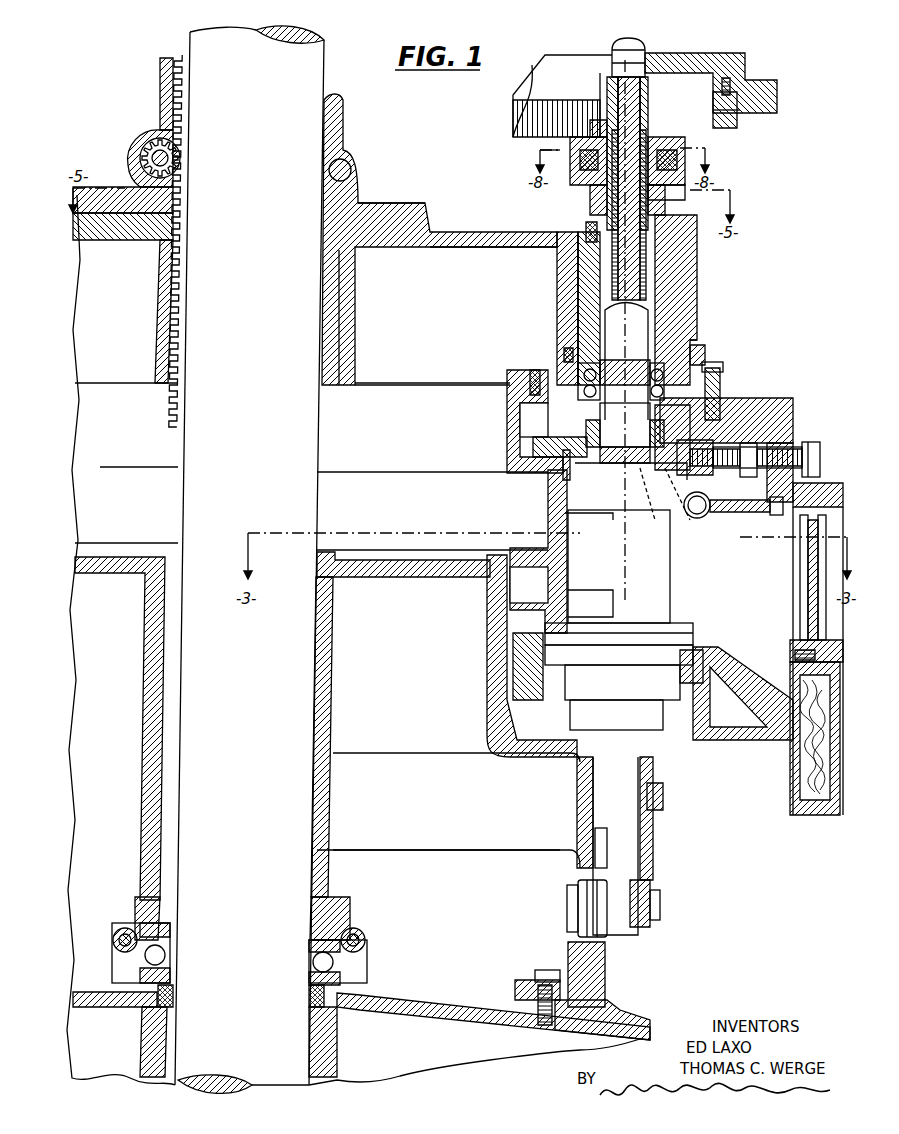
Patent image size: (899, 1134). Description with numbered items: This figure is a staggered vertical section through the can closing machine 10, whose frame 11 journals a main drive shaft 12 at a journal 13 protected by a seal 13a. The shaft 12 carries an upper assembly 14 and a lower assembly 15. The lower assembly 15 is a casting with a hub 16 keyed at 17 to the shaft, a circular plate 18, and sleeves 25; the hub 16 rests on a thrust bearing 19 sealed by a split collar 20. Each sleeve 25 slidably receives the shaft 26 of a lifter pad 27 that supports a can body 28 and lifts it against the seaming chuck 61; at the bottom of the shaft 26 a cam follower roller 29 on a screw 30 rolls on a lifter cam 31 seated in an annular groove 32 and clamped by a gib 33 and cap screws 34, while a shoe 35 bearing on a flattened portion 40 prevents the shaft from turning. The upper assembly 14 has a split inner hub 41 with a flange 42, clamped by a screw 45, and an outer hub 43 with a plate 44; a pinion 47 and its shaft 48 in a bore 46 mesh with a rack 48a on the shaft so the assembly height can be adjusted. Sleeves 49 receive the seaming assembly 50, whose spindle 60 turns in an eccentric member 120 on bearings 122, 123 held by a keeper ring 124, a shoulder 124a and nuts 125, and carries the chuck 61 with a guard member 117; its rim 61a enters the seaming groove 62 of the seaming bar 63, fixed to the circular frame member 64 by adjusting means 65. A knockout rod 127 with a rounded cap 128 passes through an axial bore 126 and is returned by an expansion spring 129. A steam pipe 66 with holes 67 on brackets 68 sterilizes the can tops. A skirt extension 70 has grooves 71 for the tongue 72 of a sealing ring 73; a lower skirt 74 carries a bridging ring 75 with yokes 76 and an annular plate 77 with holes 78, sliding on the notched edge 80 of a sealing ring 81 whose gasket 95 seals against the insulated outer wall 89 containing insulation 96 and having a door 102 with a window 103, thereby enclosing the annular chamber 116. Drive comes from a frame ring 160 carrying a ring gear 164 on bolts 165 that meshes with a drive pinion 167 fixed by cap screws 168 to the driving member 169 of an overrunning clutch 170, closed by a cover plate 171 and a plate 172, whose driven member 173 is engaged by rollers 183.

The machine 10 is at (722, 50).
The frame 11 is at (472, 996).
The main drive shaft 12 is at (322, 74).
The journal 13 is at (309, 1087).
The seal 13a is at (352, 1010).
The upper assembly 14 is at (436, 196).
The lower assembly 15 is at (450, 848).
The hub 16 is at (330, 745).
The key 17 is at (182, 738).
The circular plate 18 is at (414, 580).
The thrust bearing 19 is at (352, 925).
The split collar 20 is at (345, 972).
The sleeve 25 is at (578, 792).
The shaft 26 is at (626, 786).
The lifter pad 27 is at (694, 636).
The can body 28 is at (672, 572).
The cam follower roller 29 is at (582, 893).
The screw 30 is at (660, 914).
The lifter cam 31 is at (604, 976).
The annular groove 32 is at (600, 1012).
The gib 33 is at (532, 980).
The cap screws 34 is at (550, 970).
The shoe 35 is at (654, 860).
The flattened portion 40 is at (656, 838).
The inner hub 41 is at (332, 386).
The flange 42 is at (410, 190).
The outer hub 43 is at (140, 300).
The circular flange or plate 44 is at (458, 244).
The screw 45 is at (348, 168).
The bore 46 is at (150, 132).
The pinion 47 is at (160, 118).
The shaft 48 is at (150, 158).
The rack 48a is at (166, 414).
The sleeve 49 is at (558, 302).
The seaming assembly 50 is at (586, 292).
The spindle 60 is at (632, 278).
The seaming chuck 61 is at (655, 462).
The working edge or rim 61a is at (562, 485).
The seaming groove 62 is at (684, 446).
The seaming bar 63 is at (700, 468).
The circular frame member 64 is at (786, 400).
The adjusting and clamping means 65 is at (808, 444).
The steam pipe 66 is at (696, 518).
The holes 67 is at (660, 516).
The brackets 68 is at (722, 512).
The downward extension 70 is at (507, 428).
The grooves 71 is at (694, 344).
The tongue 72 is at (706, 352).
The sealing ring 73 is at (720, 378).
The skirt 74 is at (496, 712).
The ring 75 is at (548, 515).
The yokes 76 is at (582, 526).
The annular plate 77 is at (540, 675).
The holes 78 is at (680, 682).
The notched edge 80 is at (718, 650).
The sealing ring 81 is at (740, 672).
The outer wall 89 is at (790, 816).
The sealing gasket 95 is at (790, 730).
The insulating material 96 is at (812, 814).
The door 102 is at (788, 805).
The window 103 is at (806, 583).
The annular chamber 116 is at (744, 597).
The guard member 117 is at (566, 438).
The eccentric member 120 is at (690, 320).
The bearing 122 is at (586, 380).
The bearing 123 is at (586, 248).
The keeper ring 124 is at (586, 402).
The shoulder 124a is at (566, 352).
The nuts 125 is at (666, 208).
The axial bore 126 is at (648, 312).
The knockout rod 127 is at (640, 68).
The rounded cap 128 is at (628, 38).
The expansion spring 129 is at (580, 272).
The frame ring 160 is at (752, 84).
The ring gear 164 is at (740, 122).
The bolts 165 is at (732, 110).
The drive pinion 167 is at (742, 114).
The cap screws 168 is at (584, 148).
The driving member 169 is at (686, 152).
The overrunning clutch 170 is at (558, 150).
The cover plate 171 is at (600, 118).
The plate 172 is at (590, 185).
The driven member 173 is at (607, 200).
The roller 183 is at (660, 188).